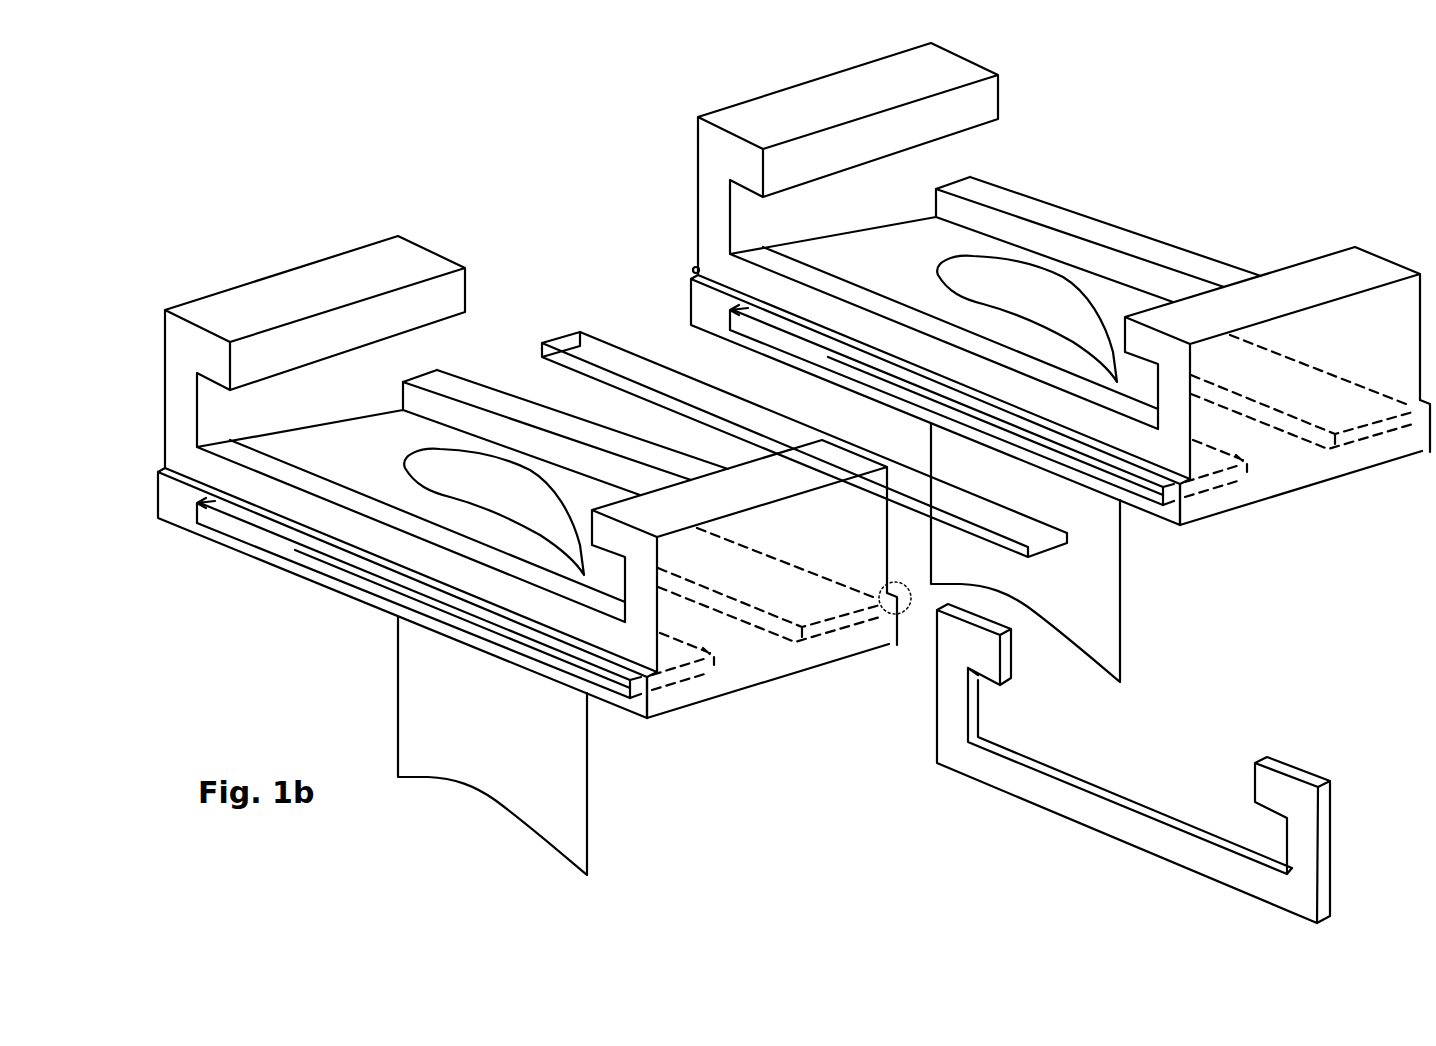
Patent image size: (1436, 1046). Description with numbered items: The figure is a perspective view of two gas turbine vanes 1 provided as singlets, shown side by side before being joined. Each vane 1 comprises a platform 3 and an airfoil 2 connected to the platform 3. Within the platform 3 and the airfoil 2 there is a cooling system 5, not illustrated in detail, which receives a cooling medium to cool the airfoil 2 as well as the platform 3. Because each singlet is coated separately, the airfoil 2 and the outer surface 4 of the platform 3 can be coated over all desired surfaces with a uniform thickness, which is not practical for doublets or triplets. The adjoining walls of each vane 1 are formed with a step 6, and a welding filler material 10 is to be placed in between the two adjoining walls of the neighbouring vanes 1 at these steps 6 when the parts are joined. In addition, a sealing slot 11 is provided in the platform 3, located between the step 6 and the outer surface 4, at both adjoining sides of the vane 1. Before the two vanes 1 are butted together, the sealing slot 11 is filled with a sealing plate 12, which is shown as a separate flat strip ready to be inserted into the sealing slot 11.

The gas turbine vane 1 is at (254, 247).
The airfoil 2 is at (557, 783).
The platform 3 is at (702, 316).
The outer surface 4 is at (665, 730).
The cooling system 5 is at (470, 483).
The step 6 is at (693, 260).
The welding filler material 10 is at (978, 768).
The sealing slot 11 is at (292, 548).
The sealing plate 12 is at (576, 343).